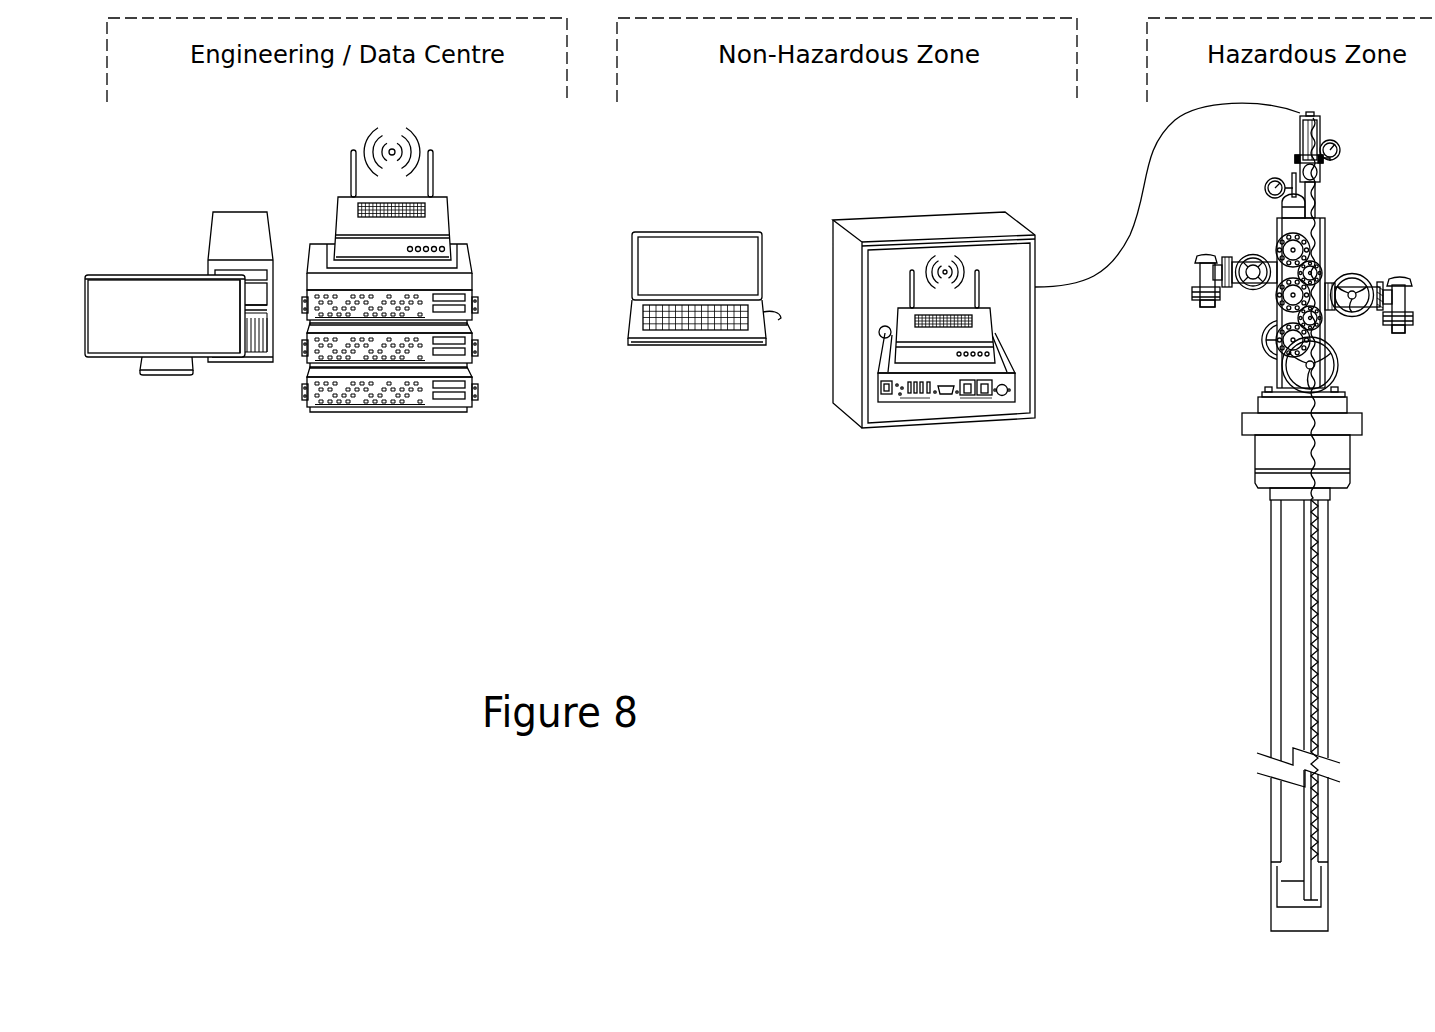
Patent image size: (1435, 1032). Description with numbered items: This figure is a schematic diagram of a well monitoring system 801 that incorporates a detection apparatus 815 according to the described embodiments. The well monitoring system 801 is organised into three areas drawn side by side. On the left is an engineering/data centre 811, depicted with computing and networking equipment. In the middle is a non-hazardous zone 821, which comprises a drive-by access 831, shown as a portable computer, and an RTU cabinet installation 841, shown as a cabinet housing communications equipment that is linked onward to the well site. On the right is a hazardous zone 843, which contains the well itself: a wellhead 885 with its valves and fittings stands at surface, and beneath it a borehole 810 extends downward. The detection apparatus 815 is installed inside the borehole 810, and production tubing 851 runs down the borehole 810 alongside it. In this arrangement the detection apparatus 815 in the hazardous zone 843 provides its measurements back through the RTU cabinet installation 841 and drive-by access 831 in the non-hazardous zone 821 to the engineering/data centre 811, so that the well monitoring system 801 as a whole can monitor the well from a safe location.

The well monitoring system 801 is at (757, 510).
The engineering/data centre 811 is at (349, 124).
The non-hazardous zone 821 is at (882, 124).
The drive-by access 831 is at (630, 331).
The RTU cabinet installation 841 is at (1035, 355).
The hazardous zone 843 is at (1422, 124).
The wellhead 885 is at (1318, 241).
The detection apparatus 815 is at (1312, 556).
The borehole 810 is at (1328, 626).
The production tubing 851 is at (1301, 638).